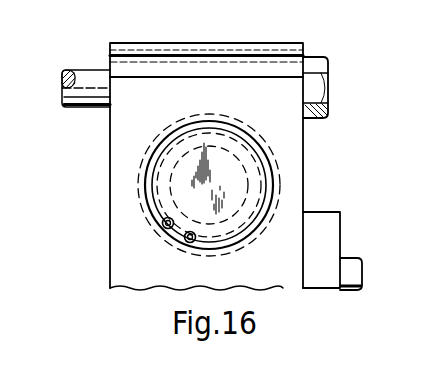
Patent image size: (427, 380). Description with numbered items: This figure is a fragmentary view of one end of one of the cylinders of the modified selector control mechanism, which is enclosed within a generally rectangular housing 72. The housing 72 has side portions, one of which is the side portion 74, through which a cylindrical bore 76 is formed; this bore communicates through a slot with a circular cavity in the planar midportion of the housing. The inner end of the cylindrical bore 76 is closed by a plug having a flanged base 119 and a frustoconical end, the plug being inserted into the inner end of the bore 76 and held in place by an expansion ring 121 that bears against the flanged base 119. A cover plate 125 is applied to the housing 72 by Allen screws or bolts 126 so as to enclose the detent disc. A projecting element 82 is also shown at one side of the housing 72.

The housing 72 is at (102, 190).
The side portion 74 is at (243, 43).
The shaft 82 is at (83, 70).
The cylindrical bore 76 is at (268, 188).
The flanged base 119 is at (178, 189).
The expansion ring 121 is at (236, 244).
The cover plate 125 is at (321, 229).
The Allen screws or bolts 126 is at (358, 277).